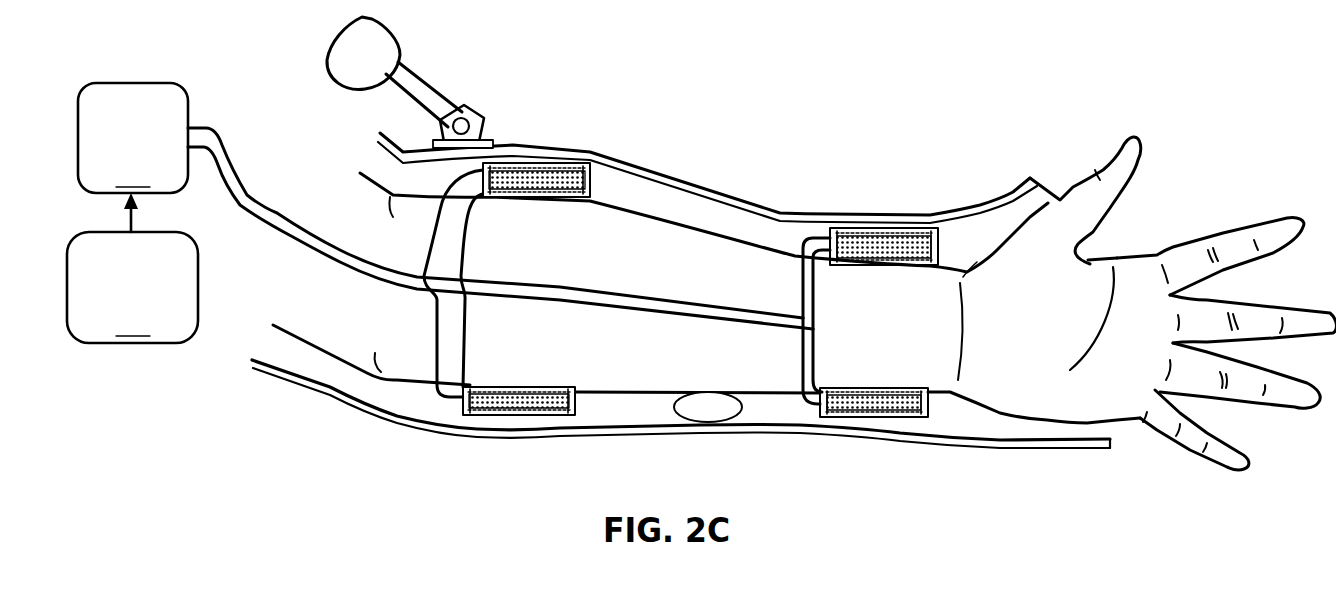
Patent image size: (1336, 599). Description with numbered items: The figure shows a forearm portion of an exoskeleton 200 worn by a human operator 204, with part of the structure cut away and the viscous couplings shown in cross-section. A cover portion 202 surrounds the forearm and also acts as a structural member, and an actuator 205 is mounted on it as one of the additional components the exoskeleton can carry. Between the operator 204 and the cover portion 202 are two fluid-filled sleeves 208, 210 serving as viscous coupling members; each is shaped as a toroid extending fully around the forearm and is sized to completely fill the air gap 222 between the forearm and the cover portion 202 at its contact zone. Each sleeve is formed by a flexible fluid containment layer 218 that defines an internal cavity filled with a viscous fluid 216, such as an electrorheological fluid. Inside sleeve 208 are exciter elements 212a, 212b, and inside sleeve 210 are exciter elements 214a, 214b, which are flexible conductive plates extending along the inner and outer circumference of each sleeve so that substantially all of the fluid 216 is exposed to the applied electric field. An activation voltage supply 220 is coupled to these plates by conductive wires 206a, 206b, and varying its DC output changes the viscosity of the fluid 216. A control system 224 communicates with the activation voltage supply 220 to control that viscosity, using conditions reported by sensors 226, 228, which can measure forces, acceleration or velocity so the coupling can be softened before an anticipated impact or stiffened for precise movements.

The exoskeleton 200 is at (727, 80).
The cover portion 202 is at (757, 200).
The human operator 204 is at (724, 290).
The actuator 205 is at (411, 78).
The conductive wire 206a is at (289, 216).
The conductive wire 206b is at (293, 242).
The fluid-filled sleeve 208 is at (690, 284).
The fluid-filled sleeve 210 is at (893, 343).
The exciter element 212a is at (594, 192).
The exciter element 212b is at (514, 197).
The exciter element 214a is at (929, 238).
The exciter element 214b is at (866, 267).
The viscous fluid 216 is at (567, 165).
The fluid containment layer 218 is at (511, 162).
The activation voltage supply 220 is at (142, 138).
The air gap 222 is at (698, 200).
The control system 224 is at (132, 268).
The sensor 226 is at (494, 137).
The sensor 228 is at (691, 417).